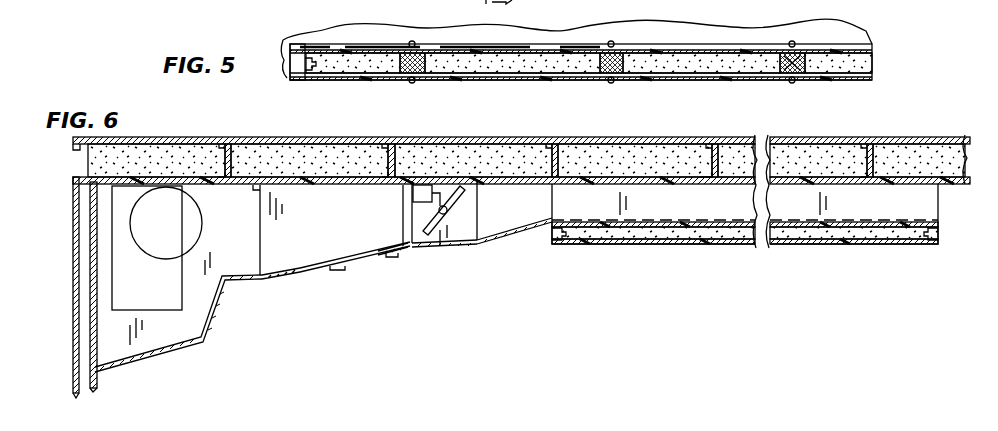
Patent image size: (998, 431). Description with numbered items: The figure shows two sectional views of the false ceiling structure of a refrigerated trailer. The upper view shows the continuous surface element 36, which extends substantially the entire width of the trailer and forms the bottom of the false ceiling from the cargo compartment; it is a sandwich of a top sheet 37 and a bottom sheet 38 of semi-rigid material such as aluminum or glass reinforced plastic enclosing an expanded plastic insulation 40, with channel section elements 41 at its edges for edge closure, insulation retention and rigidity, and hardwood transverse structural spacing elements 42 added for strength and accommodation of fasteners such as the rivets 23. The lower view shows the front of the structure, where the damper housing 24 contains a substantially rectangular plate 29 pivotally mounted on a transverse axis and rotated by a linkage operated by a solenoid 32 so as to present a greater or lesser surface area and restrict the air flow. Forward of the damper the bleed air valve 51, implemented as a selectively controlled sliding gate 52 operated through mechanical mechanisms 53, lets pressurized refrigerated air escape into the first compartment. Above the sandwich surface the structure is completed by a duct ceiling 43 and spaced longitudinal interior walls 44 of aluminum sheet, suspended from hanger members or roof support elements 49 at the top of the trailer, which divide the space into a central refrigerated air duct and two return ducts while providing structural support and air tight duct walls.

In FIG. 5, the rivets 23 is at (790, 82).
In FIG. 6, the damper housing 24 is at (453, 246).
In FIG. 6, the substantially rectangular plate 29 is at (456, 208).
In FIG. 6, the solenoid 32 is at (417, 186).
In FIG. 5, the continuous surface element 36 is at (728, 80).
In FIG. 6, the continuous surface element 36 is at (712, 246).
In FIG. 5, the top sheet 37 is at (680, 54).
In FIG. 5, the bottom sheet 38 is at (540, 80).
In FIG. 5, the insulation 40 is at (874, 60).
In FIG. 5, the channel section elements 41 is at (314, 72).
In FIG. 6, the channel section elements 41 is at (562, 246).
In FIG. 5, the transverse structural spacing elements 42 is at (800, 62).
In FIG. 6, the duct ceiling 43 is at (940, 188).
In FIG. 6, the longitudinal interior walls 44 is at (655, 210).
In FIG. 6, the hanger members or roof support elements 49 is at (560, 164).
In FIG. 6, the bleed air valve 51 is at (301, 276).
In FIG. 6, the sliding gate 52 is at (352, 272).
In FIG. 6, the mechanical mechanisms 53 is at (392, 258).